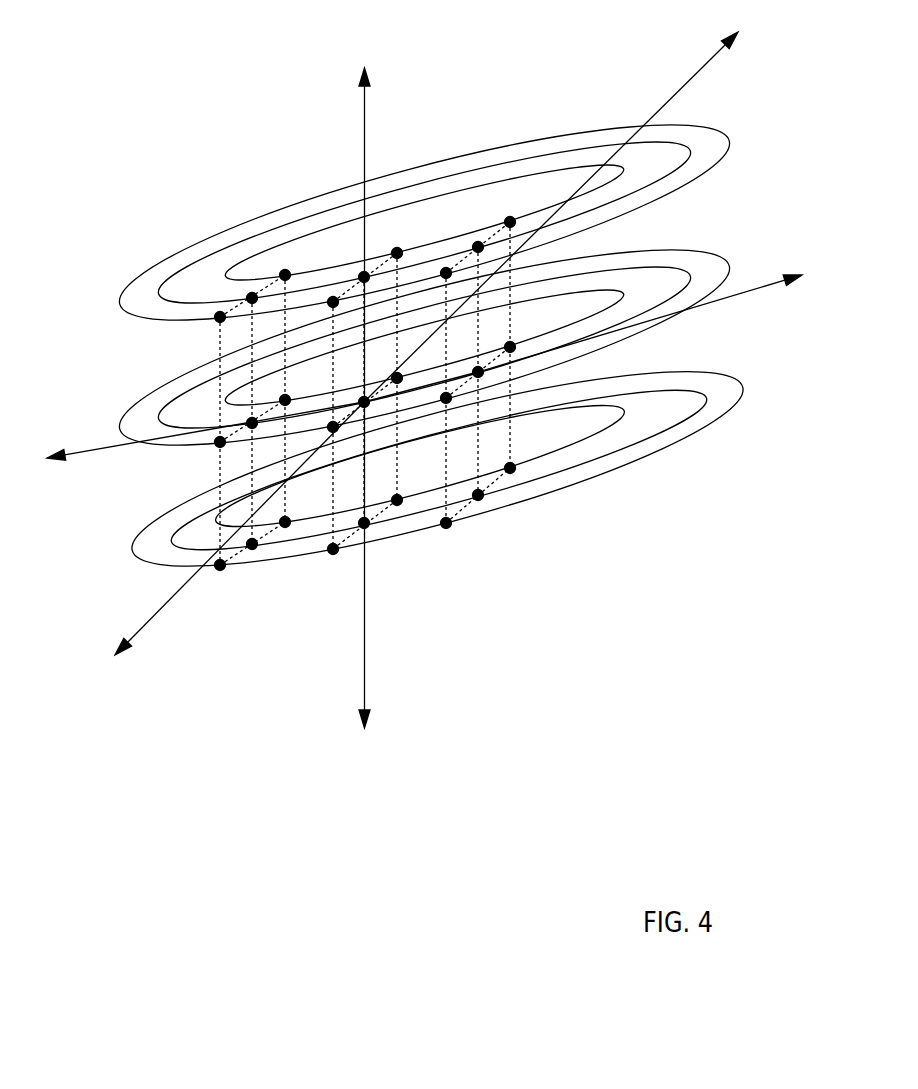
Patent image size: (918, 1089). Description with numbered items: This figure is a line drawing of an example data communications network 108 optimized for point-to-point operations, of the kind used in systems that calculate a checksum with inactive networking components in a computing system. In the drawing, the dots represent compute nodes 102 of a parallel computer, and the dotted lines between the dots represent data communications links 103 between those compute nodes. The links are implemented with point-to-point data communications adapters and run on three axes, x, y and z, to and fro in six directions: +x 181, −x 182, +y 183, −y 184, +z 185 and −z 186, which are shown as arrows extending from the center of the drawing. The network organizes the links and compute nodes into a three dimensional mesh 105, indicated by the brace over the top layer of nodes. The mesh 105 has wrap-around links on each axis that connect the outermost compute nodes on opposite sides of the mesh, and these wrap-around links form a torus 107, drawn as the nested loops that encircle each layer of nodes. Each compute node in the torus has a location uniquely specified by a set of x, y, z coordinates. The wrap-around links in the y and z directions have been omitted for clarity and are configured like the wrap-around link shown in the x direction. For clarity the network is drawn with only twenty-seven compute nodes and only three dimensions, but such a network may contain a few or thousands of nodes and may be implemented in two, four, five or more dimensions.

The compute nodes 102 is at (510, 468).
The data communications links 103 is at (220, 475).
The three dimensional mesh 105 is at (510, 221).
The torus 107 is at (198, 219).
The data communications network 108 is at (323, 955).
The +x direction 181 is at (838, 303).
The −x direction 182 is at (43, 498).
The +y direction 183 is at (780, 58).
The −y direction 184 is at (105, 703).
The +z direction 185 is at (382, 58).
The −z direction 186 is at (383, 791).